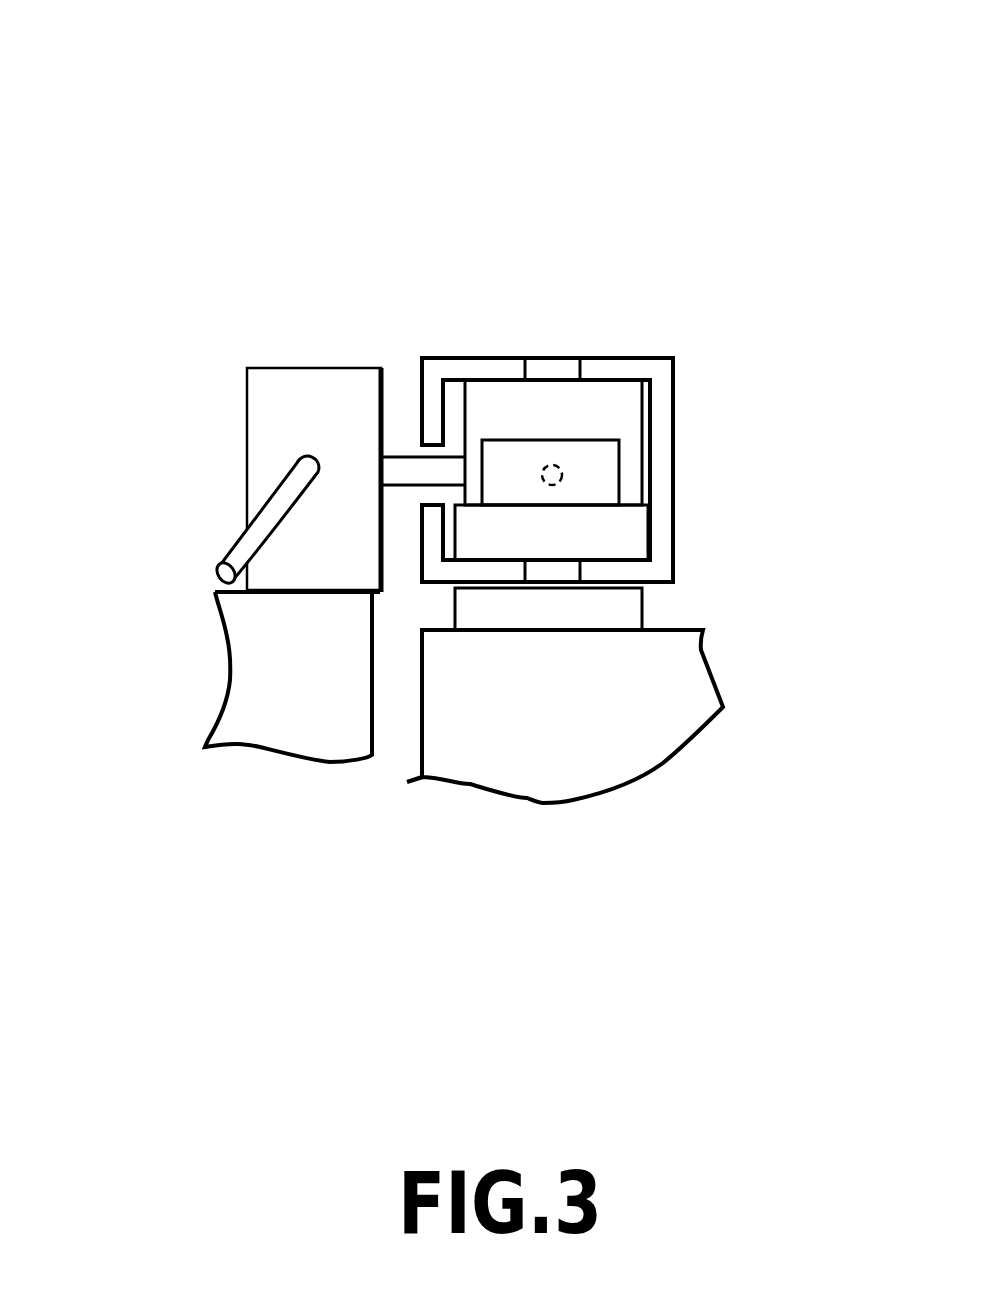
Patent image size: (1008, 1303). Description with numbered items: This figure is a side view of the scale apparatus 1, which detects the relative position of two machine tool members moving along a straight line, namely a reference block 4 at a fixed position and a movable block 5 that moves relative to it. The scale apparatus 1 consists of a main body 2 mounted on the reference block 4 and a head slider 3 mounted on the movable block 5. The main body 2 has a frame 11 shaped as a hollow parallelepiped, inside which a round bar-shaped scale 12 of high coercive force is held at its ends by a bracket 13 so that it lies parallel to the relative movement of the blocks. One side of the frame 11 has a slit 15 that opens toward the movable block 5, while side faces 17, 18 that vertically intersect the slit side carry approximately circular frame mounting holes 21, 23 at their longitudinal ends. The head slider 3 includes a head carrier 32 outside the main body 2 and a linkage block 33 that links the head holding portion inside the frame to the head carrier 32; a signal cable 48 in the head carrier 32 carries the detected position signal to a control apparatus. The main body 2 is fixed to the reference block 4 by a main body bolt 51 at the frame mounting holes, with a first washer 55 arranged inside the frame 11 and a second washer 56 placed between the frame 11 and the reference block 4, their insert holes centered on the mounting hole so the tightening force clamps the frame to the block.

The scale apparatus 1 is at (541, 110).
The main body 2 is at (700, 372).
The head slider 3 is at (288, 358).
The reference block 4 is at (538, 760).
The movable block 5 is at (270, 702).
The frame 11 is at (673, 467).
The scale 12 is at (563, 470).
The bracket 13 is at (513, 417).
The slit 15 is at (392, 457).
The side face 17 is at (632, 357).
The side face 18 is at (643, 615).
The frame mounting hole 21 is at (557, 358).
The frame mounting hole 23 is at (555, 570).
The head carrier 32 is at (330, 368).
The linkage block 33 is at (401, 414).
The signal cable 48 is at (235, 558).
The main body bolt 51 is at (602, 456).
The first washer 55 is at (621, 531).
The second washer 56 is at (660, 600).